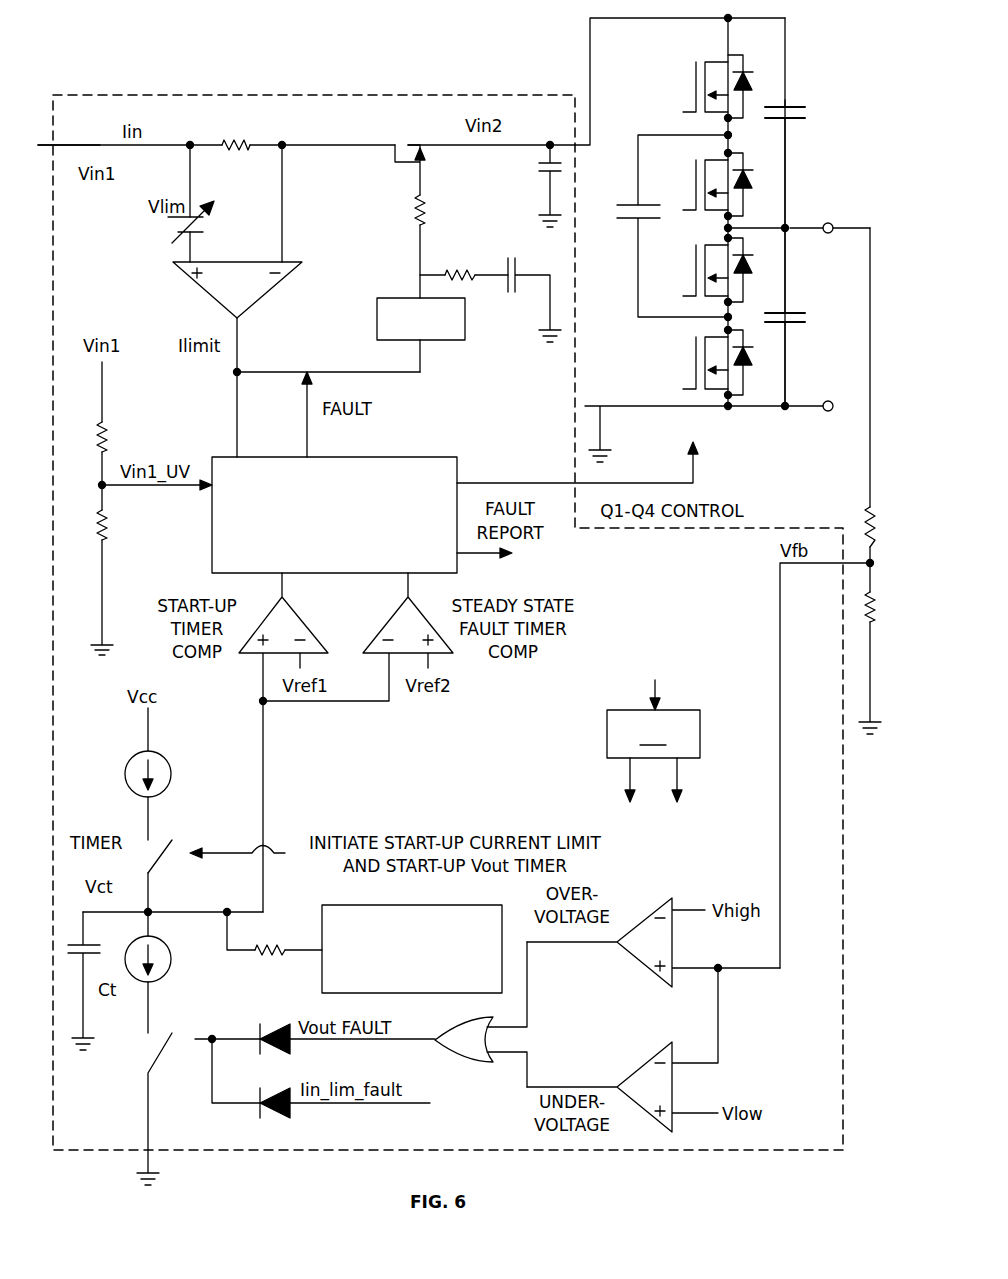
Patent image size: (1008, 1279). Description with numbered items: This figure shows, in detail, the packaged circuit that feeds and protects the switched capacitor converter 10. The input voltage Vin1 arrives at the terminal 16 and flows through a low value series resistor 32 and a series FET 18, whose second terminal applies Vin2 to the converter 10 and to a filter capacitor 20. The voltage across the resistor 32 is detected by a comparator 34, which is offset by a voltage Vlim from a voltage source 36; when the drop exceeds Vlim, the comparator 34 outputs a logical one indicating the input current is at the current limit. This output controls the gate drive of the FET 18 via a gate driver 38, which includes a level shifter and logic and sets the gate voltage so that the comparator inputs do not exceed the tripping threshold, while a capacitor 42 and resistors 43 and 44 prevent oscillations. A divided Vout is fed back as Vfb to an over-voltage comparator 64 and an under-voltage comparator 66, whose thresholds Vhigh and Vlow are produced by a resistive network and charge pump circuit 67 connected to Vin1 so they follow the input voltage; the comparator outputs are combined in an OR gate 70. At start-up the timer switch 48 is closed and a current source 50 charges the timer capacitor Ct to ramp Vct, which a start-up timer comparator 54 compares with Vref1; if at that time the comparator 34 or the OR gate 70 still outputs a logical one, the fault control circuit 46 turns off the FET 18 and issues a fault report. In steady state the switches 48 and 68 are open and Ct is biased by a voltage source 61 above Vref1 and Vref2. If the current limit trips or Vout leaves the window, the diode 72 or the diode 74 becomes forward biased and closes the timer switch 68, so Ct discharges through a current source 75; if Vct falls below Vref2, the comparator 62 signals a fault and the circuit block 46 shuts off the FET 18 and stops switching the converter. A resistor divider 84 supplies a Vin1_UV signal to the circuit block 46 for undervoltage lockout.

The switched capacitor converter 10 is at (814, 62).
The input voltage Vin1 terminal 16 is at (80, 143).
The FET 18 is at (392, 153).
The filter capacitor 20 is at (538, 173).
The series resistor 32 is at (246, 142).
The comparator 34 is at (205, 292).
The voltage source 36 is at (165, 228).
The gate driver 38 is at (398, 298).
The capacitor 42 is at (512, 295).
The resistor 43 is at (412, 203).
The resistor 44 is at (462, 272).
The fault control circuit 46 is at (454, 457).
The timer switch 48 is at (178, 840).
The current source 50 is at (172, 774).
The start-up timer comparator 54 is at (308, 627).
The voltage source 61 is at (320, 916).
The comparator 62 is at (386, 624).
The comparator 64 is at (675, 942).
The comparator 66 is at (675, 1091).
The resistive network and charge pump circuit 67 is at (653, 733).
The timer switch 68 is at (140, 1056).
The OR gate 70 is at (485, 1066).
The diode 72 is at (283, 1022).
The diode 74 is at (294, 1112).
The current source 75 is at (172, 964).
The resistor divider 84 is at (107, 428).